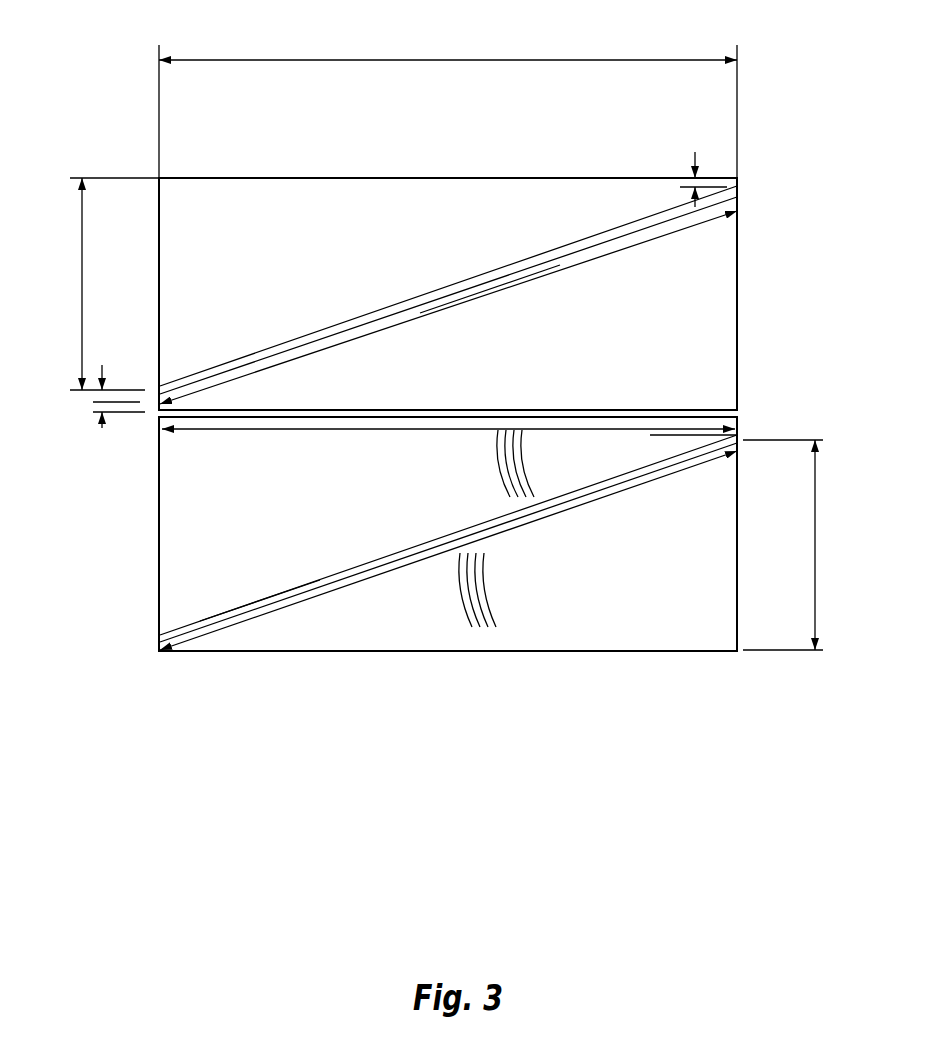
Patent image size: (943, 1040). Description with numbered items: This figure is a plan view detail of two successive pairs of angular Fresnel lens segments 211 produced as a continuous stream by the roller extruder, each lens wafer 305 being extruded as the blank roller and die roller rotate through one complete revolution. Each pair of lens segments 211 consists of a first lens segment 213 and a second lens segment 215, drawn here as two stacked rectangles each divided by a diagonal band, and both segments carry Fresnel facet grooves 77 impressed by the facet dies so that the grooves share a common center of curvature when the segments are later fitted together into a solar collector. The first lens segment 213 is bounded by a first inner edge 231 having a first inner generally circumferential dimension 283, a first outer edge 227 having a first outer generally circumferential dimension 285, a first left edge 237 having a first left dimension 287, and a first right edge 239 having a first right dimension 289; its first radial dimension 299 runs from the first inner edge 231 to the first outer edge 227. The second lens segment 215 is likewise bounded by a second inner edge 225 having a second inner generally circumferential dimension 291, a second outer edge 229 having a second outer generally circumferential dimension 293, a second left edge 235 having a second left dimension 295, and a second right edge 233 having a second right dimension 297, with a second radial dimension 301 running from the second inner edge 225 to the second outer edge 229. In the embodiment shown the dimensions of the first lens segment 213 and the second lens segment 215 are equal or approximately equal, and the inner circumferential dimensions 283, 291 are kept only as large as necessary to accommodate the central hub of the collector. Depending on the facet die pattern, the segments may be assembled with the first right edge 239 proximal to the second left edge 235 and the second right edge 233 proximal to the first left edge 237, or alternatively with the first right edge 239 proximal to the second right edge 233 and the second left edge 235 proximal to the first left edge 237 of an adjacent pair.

The Fresnel facet grooves 77 is at (527, 460).
The pair of lens segments 211 is at (375, 178).
The first lens segment 213 is at (708, 270).
The second lens segment 215 is at (433, 187).
The second inner edge 225 is at (740, 186).
The first outer edge 227 is at (745, 336).
The second outer edge 229 is at (158, 238).
The first inner edge 231 is at (160, 411).
The second right edge 233 is at (277, 178).
The second left edge 235 is at (370, 313).
The first left edge 237 is at (606, 254).
The first right edge 239 is at (297, 410).
The first inner generally circumferential dimension 283 is at (102, 428).
The first outer generally circumferential dimension 285 is at (816, 565).
The first left dimension 287 is at (481, 298).
The first right dimension 289 is at (448, 450).
The second inner generally circumferential dimension 291 is at (695, 152).
The second outer generally circumferential dimension 293 is at (82, 228).
The second left dimension 295 is at (226, 620).
The second right dimension 297 is at (303, 60).
The first radial dimension 299 is at (385, 331).
The second radial dimension 301 is at (262, 606).
The lens wafer 305 is at (739, 178).